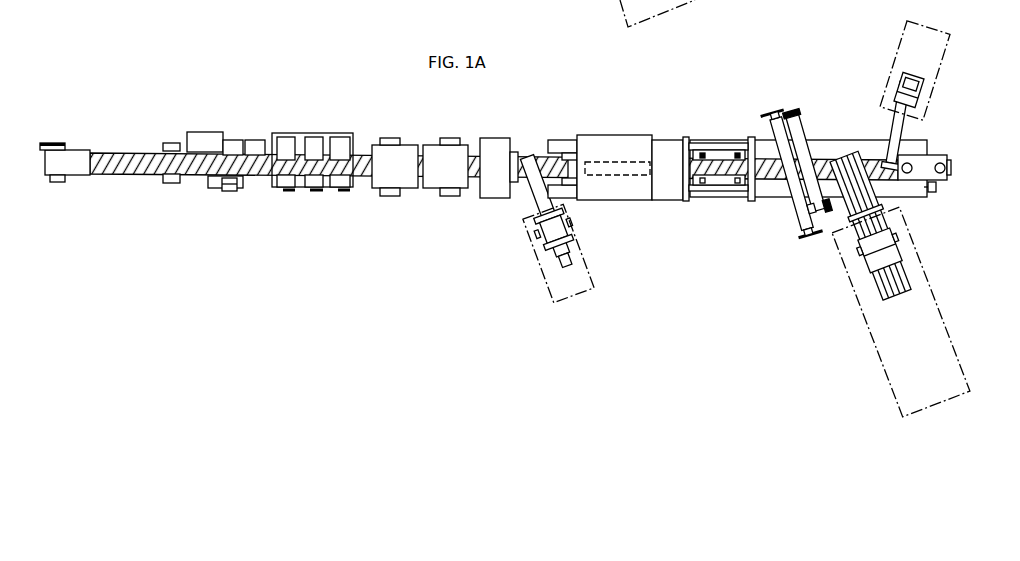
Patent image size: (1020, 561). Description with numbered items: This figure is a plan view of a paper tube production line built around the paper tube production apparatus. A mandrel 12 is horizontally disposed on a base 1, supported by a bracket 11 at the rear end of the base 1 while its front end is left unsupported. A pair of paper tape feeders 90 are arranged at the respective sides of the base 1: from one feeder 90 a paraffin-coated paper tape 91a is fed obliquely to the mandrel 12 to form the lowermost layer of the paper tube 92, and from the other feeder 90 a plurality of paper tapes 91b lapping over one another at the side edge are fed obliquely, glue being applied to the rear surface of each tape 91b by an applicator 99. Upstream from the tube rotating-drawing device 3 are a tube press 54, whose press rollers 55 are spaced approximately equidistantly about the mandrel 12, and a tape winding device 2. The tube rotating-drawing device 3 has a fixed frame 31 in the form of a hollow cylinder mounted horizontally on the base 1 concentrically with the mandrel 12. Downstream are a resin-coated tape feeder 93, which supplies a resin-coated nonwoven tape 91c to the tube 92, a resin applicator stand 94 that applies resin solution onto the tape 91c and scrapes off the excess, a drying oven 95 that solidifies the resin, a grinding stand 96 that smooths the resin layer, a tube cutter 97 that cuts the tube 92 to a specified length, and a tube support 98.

The base 1 is at (912, 148).
The tape winding device 2 is at (790, 210).
The tube rotating-drawing device 3 is at (618, 182).
The bracket 11 is at (945, 158).
The mandrel 12 is at (905, 182).
The fixed frame 31 is at (640, 188).
The tube press 54 is at (722, 169).
The press rollers 55 is at (712, 198).
The paper tape feeders 90 is at (935, 300).
The paper tape 91a is at (893, 138).
The paper tapes 91b is at (850, 208).
The resin-coated tape 91c is at (538, 196).
The paper tube 92 is at (772, 182).
The resin-coated tape feeder 93 is at (533, 258).
The resin applicator stand 94 is at (477, 205).
The drying oven 95 is at (411, 199).
The grinding stand 96 is at (344, 130).
The tube cutter 97 is at (200, 129).
The tube support 98 is at (73, 181).
The applicator 99 is at (873, 270).